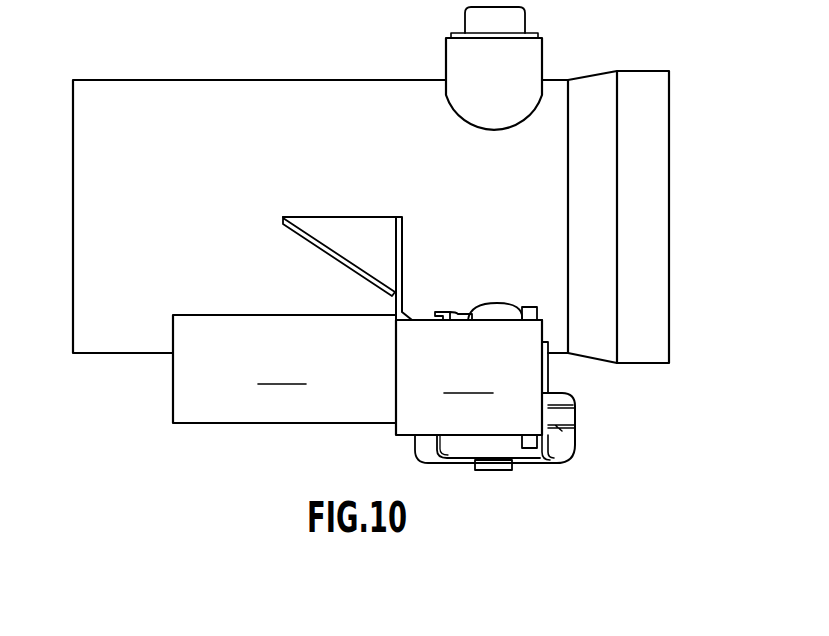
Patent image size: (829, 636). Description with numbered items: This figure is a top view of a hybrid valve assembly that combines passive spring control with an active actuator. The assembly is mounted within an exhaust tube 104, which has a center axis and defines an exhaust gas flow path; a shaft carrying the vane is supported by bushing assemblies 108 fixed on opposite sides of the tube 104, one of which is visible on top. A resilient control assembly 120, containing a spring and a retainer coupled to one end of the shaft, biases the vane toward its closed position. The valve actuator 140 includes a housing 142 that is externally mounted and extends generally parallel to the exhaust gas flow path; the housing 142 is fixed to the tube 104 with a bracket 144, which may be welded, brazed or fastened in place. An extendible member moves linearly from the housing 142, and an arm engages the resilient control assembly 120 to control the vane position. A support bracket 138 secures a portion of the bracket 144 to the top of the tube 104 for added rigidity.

The exhaust tube 104 is at (138, 98).
The bushing assembly 108 is at (515, 77).
The resilient control assembly 120 is at (563, 463).
The support bracket 138 is at (362, 237).
The valve actuator 140 is at (358, 417).
The housing 142 is at (284, 369).
The bracket 144 is at (478, 386).